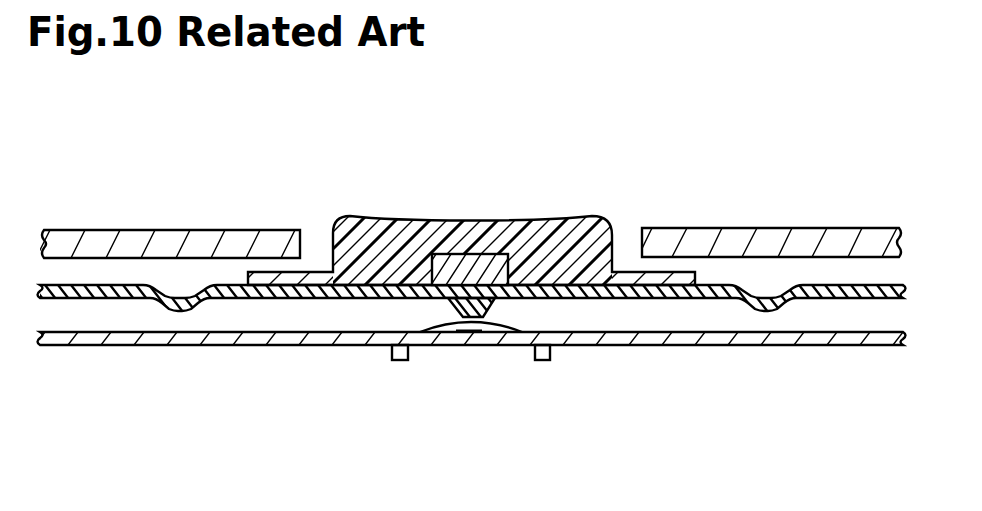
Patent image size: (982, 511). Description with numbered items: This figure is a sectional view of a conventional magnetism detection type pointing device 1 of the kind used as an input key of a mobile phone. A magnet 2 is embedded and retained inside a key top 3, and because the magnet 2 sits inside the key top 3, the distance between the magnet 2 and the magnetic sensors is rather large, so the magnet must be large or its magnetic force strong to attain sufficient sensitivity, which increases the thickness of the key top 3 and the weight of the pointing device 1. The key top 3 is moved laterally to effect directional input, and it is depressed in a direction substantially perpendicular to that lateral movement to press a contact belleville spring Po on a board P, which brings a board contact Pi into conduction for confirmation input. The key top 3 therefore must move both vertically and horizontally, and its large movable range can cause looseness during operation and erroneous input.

The magnetism detection type pointing device 1 is at (628, 186).
The magnet 2 is at (424, 253).
The key top 3 is at (545, 217).
The board P is at (197, 345).
The board contact Pi is at (458, 328).
The contact belleville spring Po is at (498, 315).